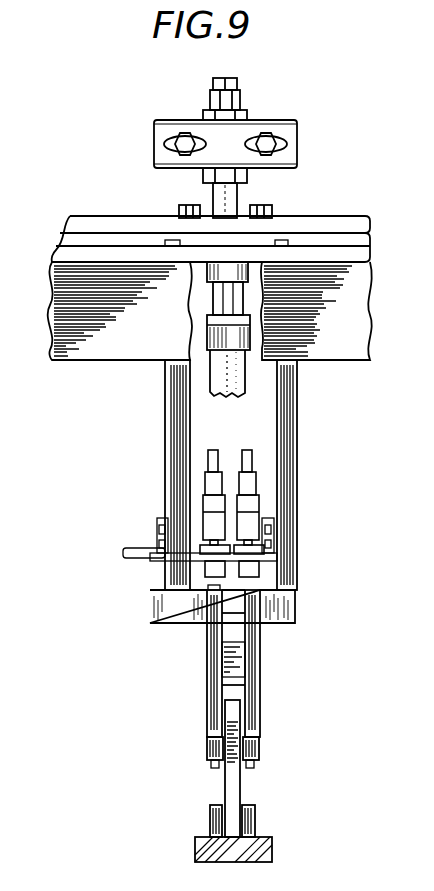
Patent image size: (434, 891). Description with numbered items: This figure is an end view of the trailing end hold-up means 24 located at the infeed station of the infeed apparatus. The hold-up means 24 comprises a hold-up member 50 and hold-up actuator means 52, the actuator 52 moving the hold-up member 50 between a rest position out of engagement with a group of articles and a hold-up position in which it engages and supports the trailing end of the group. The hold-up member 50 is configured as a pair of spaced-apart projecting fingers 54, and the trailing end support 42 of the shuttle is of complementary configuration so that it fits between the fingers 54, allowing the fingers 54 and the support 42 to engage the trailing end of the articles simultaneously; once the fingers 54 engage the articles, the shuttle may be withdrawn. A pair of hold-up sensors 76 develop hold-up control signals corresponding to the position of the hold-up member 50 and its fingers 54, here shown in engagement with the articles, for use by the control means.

The trailing end hold-up means 24 is at (80, 401).
The hold-up actuator means 52 is at (198, 404).
The hold-up sensors 76 is at (247, 450).
The hold-up member 50 is at (207, 705).
The projecting fingers 54 is at (207, 752).
The trailing end support 42 is at (230, 780).